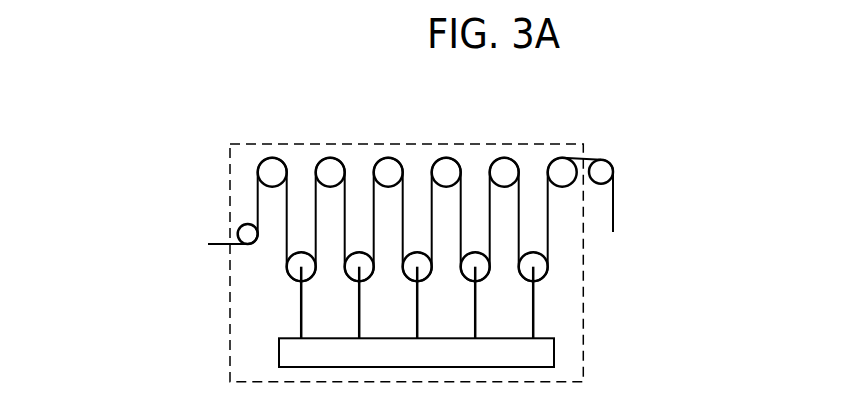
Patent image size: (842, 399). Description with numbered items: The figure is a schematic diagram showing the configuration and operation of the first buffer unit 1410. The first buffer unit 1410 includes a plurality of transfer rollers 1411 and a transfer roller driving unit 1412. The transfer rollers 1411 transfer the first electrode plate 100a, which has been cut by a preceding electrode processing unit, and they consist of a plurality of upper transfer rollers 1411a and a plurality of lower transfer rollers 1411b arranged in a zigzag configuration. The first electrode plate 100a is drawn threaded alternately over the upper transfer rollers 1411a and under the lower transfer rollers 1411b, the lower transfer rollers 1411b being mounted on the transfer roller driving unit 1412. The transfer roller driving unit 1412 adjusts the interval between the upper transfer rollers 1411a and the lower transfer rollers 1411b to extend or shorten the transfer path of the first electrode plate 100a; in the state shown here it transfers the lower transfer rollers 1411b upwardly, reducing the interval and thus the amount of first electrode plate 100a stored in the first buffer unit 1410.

The first buffer unit 1410 is at (80, 204).
The first electrode plate 100a is at (613, 190).
The transfer rollers 1411 is at (531, 248).
The upper transfer rollers 1411a is at (562, 181).
The lower transfer rollers 1411b is at (540, 274).
The transfer roller driving unit 1412 is at (547, 355).